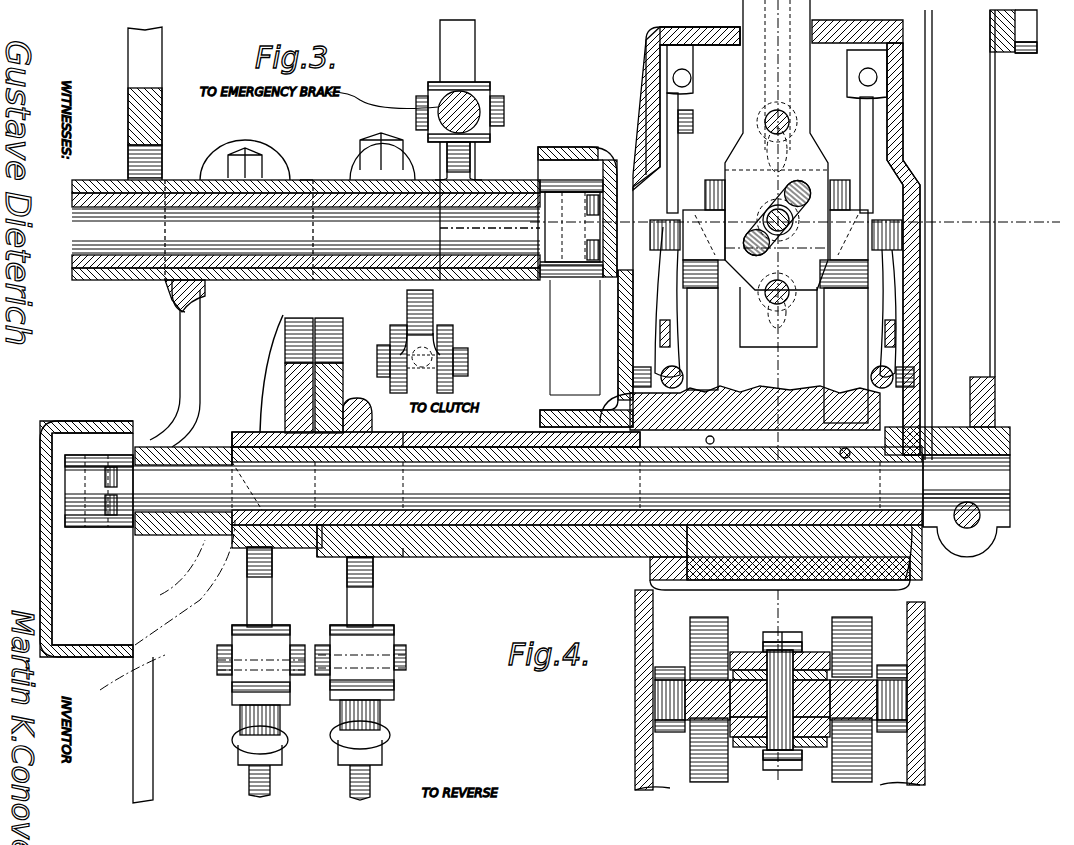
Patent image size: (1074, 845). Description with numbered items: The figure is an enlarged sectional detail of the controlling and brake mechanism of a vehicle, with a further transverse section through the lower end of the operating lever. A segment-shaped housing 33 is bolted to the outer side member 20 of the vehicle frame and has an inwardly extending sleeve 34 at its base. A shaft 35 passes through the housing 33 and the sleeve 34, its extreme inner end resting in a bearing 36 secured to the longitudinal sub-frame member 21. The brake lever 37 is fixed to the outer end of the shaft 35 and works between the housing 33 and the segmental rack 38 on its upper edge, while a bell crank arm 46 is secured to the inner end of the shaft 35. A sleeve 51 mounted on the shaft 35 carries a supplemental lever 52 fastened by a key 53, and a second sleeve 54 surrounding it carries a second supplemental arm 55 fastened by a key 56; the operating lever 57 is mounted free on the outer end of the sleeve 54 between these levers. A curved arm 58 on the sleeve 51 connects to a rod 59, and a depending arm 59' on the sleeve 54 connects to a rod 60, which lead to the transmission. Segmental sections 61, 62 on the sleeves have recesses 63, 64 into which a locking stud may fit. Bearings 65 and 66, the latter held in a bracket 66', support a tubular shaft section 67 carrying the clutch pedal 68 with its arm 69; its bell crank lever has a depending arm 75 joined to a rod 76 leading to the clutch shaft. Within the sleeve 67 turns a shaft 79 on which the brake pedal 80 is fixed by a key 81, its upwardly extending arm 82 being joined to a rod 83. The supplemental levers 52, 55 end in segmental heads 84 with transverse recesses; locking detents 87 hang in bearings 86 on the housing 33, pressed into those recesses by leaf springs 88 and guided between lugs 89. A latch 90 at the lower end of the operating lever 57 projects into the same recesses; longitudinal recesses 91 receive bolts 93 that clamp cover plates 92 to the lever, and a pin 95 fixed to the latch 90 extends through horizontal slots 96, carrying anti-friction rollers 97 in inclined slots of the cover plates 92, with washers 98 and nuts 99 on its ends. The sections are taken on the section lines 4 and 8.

In FIG. 3, the section line 4 is at (795, 223).
In FIG. 3, the section line 8 is at (777, 230).
In FIG. 4, the section line 8 is at (770, 685).
In FIG. 3, the outer side member of vehicle frame 20 is at (567, 147).
In FIG. 3, the longitudinal member of sub frame 21 is at (96, 421).
In FIG. 3, the segment-shaped housing 33 is at (935, 290).
In FIG. 4, the segment-shaped housing 33 is at (820, 590).
In FIG. 3, the sleeve 34 is at (557, 557).
In FIG. 3, the shaft 35 is at (1018, 466).
In FIG. 3, the bearing 36 is at (62, 490).
In FIG. 3, the brake lever 37 is at (960, 122).
In FIG. 3, the segmental rack 38 is at (1000, 55).
In FIG. 3, the bell crank arm 46 is at (195, 447).
In FIG. 3, the sleeve 51 is at (480, 548).
In FIG. 3, the supplemental lever 52 is at (844, 341).
In FIG. 4, the supplemental lever 52 is at (872, 735).
In FIG. 3, the key 53 is at (843, 460).
In FIG. 3, the second sleeve 54 is at (625, 560).
In FIG. 3, the second supplemental arm 55 is at (700, 325).
In FIG. 4, the second supplemental arm 55 is at (690, 730).
In FIG. 3, the key 56 is at (735, 400).
In FIG. 3, the operating lever 57 is at (778, 45).
In FIG. 4, the operating lever 57 is at (820, 747).
In FIG. 3, the curved arm 58 is at (247, 590).
In FIG. 3, the rod 59 is at (249, 782).
In FIG. 3, the depending arm 59' is at (360, 661).
In FIG. 3, the rod 60 is at (372, 790).
In FIG. 3, the segmental section 61 is at (285, 396).
In FIG. 3, the segmental section 62 is at (343, 385).
In FIG. 3, the recess 63 is at (300, 318).
In FIG. 3, the recess 64 is at (332, 318).
In FIG. 3, the bearing 65 is at (590, 178).
In FIG. 3, the bearing 66 is at (306, 203).
In FIG. 3, the bracket 66' is at (175, 363).
In FIG. 3, the tubular shaft section 67 is at (305, 180).
In FIG. 3, the clutch pedal 68 is at (150, 70).
In FIG. 3, the arm 69 is at (163, 118).
In FIG. 3, the depending arm of bell crank lever 75 is at (435, 310).
In FIG. 3, the rod 76 is at (430, 350).
In FIG. 3, the shaft 79 is at (306, 231).
In FIG. 3, the brake pedal 80 is at (468, 50).
In FIG. 3, the key 81 is at (440, 228).
In FIG. 3, the upwardly extending arm 82 is at (472, 160).
In FIG. 3, the rod 83 is at (440, 98).
In FIG. 4, the segmental head 84 is at (705, 782).
In FIG. 3, the bearing 86 is at (646, 50).
In FIG. 3, the locking detent 87 is at (693, 150).
In FIG. 4, the locking detent 87 is at (690, 680).
In FIG. 3, the leaf spring 88 is at (660, 310).
In FIG. 4, the leaf spring 88 is at (907, 697).
In FIG. 3, the inwardly projecting lug 89 is at (665, 222).
In FIG. 4, the inwardly projecting lug 89 is at (672, 660).
In FIG. 3, the latch 90 is at (725, 180).
In FIG. 4, the latch 90 is at (745, 652).
In FIG. 3, the longitudinal recess 91 is at (788, 150).
In FIG. 3, the cover plate 92 is at (799, 328).
In FIG. 4, the cover plate 92 is at (820, 650).
In FIG. 3, the bolt 93 is at (790, 110).
In FIG. 3, the pin 95 is at (765, 212).
In FIG. 4, the pin 95 is at (780, 700).
In FIG. 3, the horizontal slot 96 is at (808, 190).
In FIG. 3, the anti-friction roller 97 is at (790, 230).
In FIG. 4, the anti-friction roller 97 is at (815, 670).
In FIG. 4, the washer 98 is at (805, 750).
In FIG. 4, the nut 99 is at (780, 770).